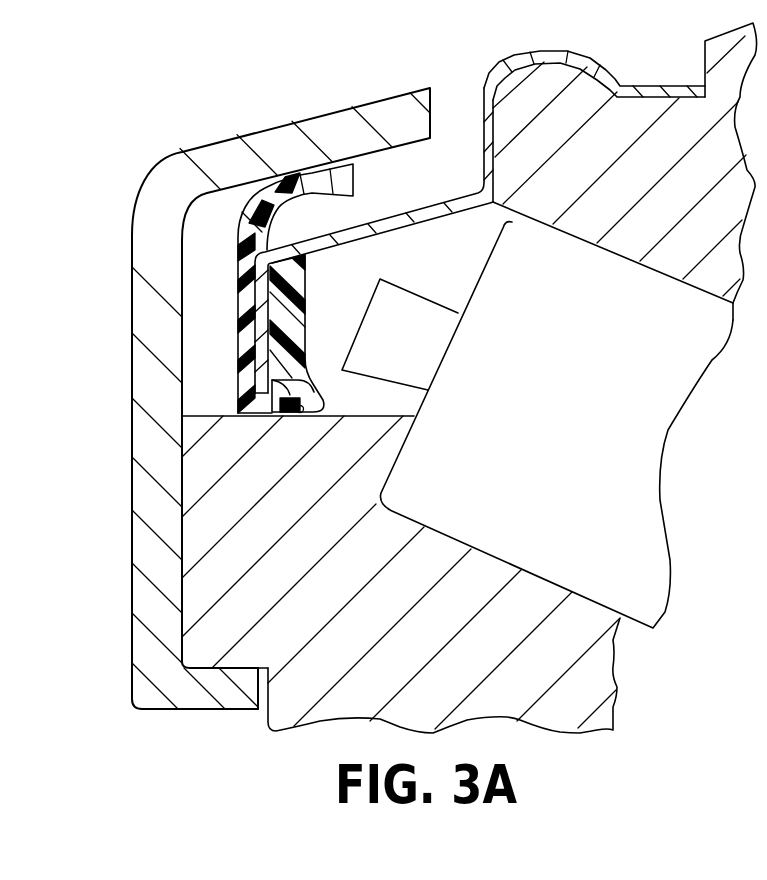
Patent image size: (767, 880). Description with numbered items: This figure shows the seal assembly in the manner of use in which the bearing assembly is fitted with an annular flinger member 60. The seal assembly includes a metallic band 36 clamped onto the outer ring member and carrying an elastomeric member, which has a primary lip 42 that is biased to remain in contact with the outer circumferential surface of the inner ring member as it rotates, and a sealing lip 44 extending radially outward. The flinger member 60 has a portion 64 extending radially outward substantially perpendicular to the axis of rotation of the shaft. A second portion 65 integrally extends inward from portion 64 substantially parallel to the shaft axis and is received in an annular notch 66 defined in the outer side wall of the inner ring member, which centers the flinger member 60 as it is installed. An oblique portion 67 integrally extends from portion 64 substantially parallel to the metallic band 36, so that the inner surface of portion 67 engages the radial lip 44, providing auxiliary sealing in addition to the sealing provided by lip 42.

The flinger member 60 is at (176, 119).
The portion 64 is at (132, 268).
The oblique portion 67 is at (287, 122).
The sealing lip 44 is at (317, 199).
The metallic band 36 is at (393, 228).
The primary lip 42 is at (322, 408).
The second portion 65 is at (190, 713).
The annular notch 66 is at (268, 716).